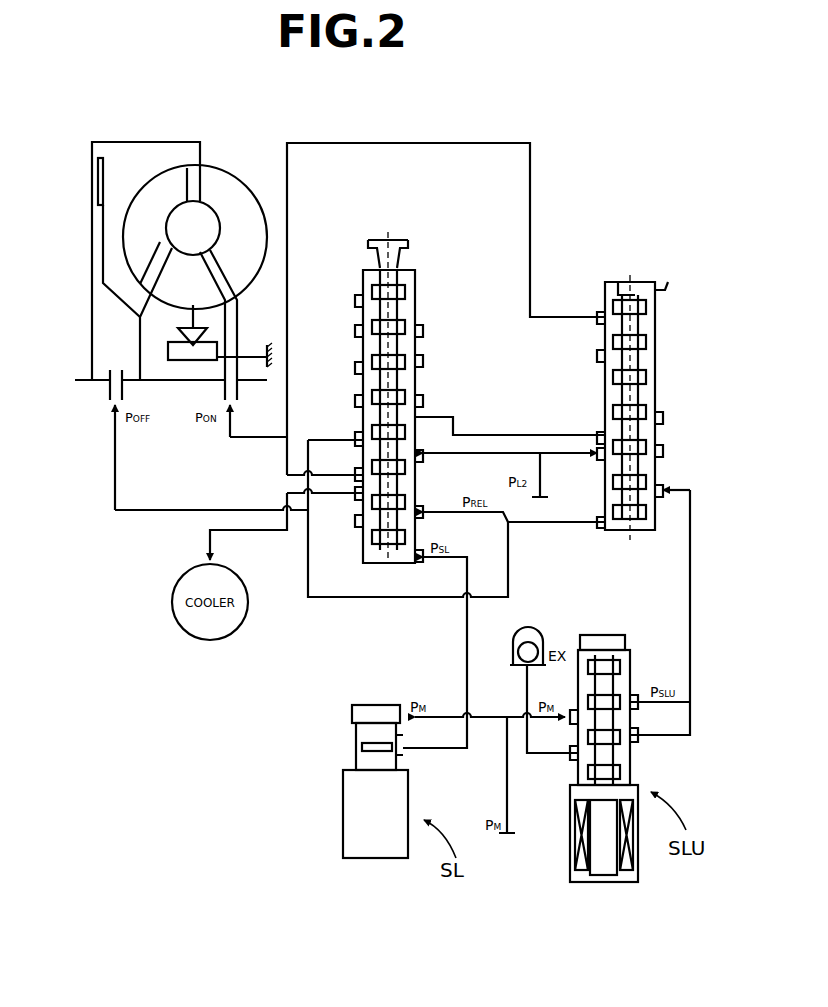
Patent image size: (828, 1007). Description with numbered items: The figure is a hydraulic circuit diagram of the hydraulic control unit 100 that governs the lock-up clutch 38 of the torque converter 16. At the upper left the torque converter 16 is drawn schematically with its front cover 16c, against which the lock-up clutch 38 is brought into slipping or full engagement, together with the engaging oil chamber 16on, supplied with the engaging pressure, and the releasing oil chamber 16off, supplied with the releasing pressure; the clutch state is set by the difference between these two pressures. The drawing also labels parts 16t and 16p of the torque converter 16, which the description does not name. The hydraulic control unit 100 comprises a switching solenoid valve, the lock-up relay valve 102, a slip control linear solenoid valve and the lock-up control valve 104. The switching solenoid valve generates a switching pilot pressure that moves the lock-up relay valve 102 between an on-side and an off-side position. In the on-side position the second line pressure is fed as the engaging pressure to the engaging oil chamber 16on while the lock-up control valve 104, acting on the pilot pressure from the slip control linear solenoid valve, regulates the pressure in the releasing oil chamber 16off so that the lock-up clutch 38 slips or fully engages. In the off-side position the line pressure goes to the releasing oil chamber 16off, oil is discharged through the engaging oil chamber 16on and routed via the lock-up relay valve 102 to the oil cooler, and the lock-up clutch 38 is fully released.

The torque converter 16 is at (240, 124).
The front cover 16c is at (91, 177).
The engaging oil chamber 16on is at (127, 153).
The turbine side passage 16t is at (171, 181).
The piston 16p is at (243, 203).
The releasing oil chamber 16off is at (97, 333).
The lock-up clutch 38 is at (97, 192).
The lock-up relay valve 102 is at (391, 218).
The lock-up control valve 104 is at (633, 258).
The hydraulic control unit 100 is at (139, 766).